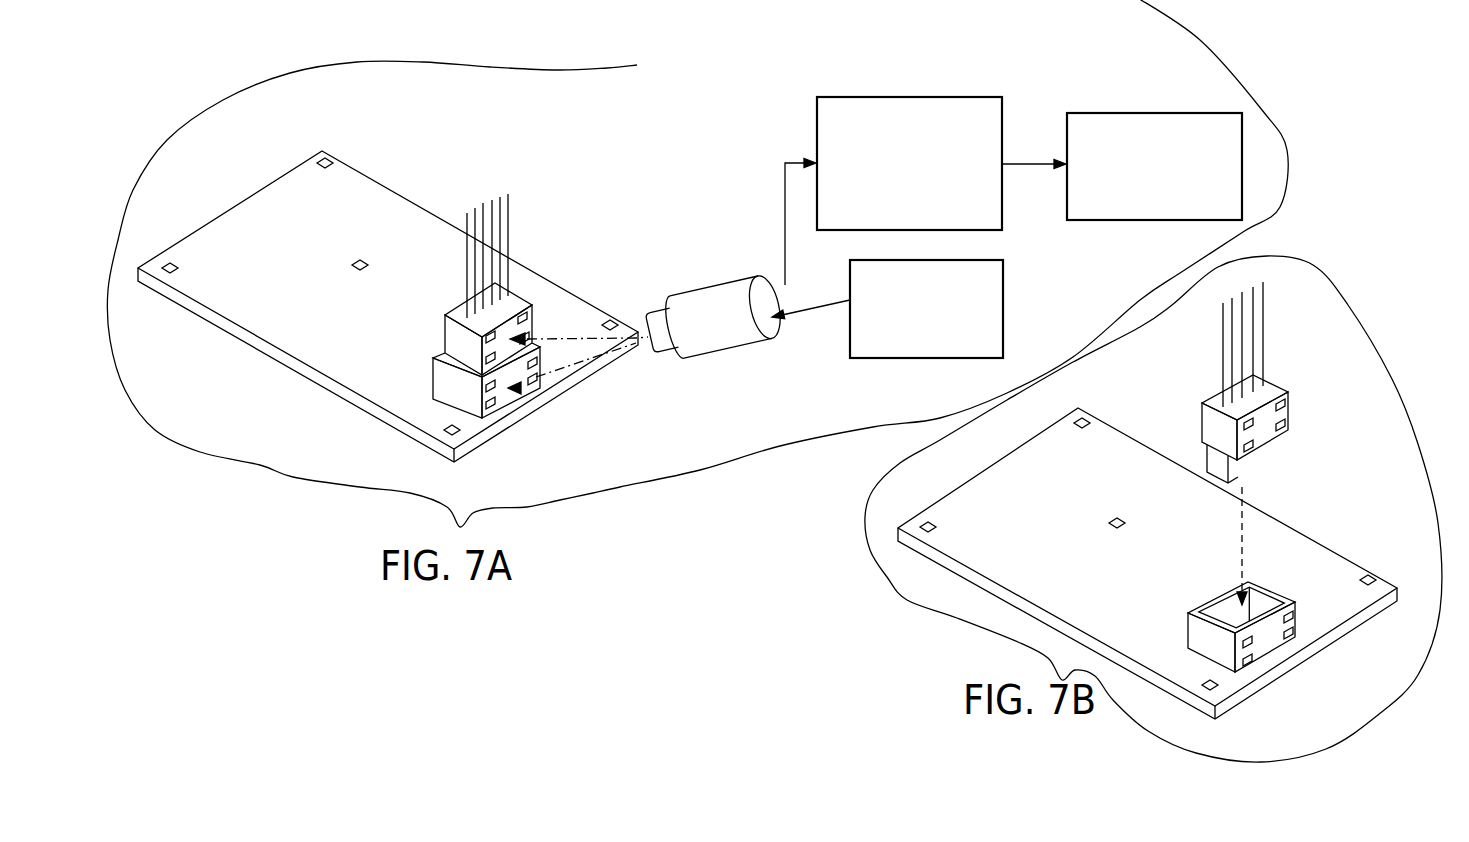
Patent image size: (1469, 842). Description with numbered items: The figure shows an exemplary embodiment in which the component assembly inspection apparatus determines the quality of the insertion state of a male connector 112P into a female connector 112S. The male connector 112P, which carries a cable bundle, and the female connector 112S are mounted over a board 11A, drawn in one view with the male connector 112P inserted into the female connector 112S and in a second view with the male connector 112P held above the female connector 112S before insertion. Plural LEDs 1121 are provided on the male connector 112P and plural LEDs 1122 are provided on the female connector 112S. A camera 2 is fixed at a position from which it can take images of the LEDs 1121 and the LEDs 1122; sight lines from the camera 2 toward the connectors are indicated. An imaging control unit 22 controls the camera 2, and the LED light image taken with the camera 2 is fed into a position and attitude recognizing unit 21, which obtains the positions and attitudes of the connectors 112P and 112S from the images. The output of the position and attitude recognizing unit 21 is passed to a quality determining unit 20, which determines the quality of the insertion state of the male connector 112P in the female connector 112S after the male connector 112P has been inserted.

In FIG. 7A, the camera 2 is at (722, 303).
In FIG. 7A, the quality determining unit 20 is at (1102, 113).
In FIG. 7A, the position and attitude recognizing unit 21 is at (943, 97).
In FIG. 7A, the imaging control unit 22 is at (1003, 294).
In FIG. 7B, the circuit board 11A is at (1353, 562).
In FIG. 7A, the male connector 112P is at (512, 290).
In FIG. 7B, the male connector 112P is at (1272, 387).
In FIG. 7A, the female connector 112S is at (460, 395).
In FIG. 7B, the female connector 112S is at (1223, 657).
In FIG. 7A, the LEDs 1121 is at (520, 318).
In FIG. 7B, the LEDs 1121 is at (1253, 446).
In FIG. 7A, the LEDs 1122 is at (537, 362).
In FIG. 7B, the LEDs 1122 is at (1288, 618).